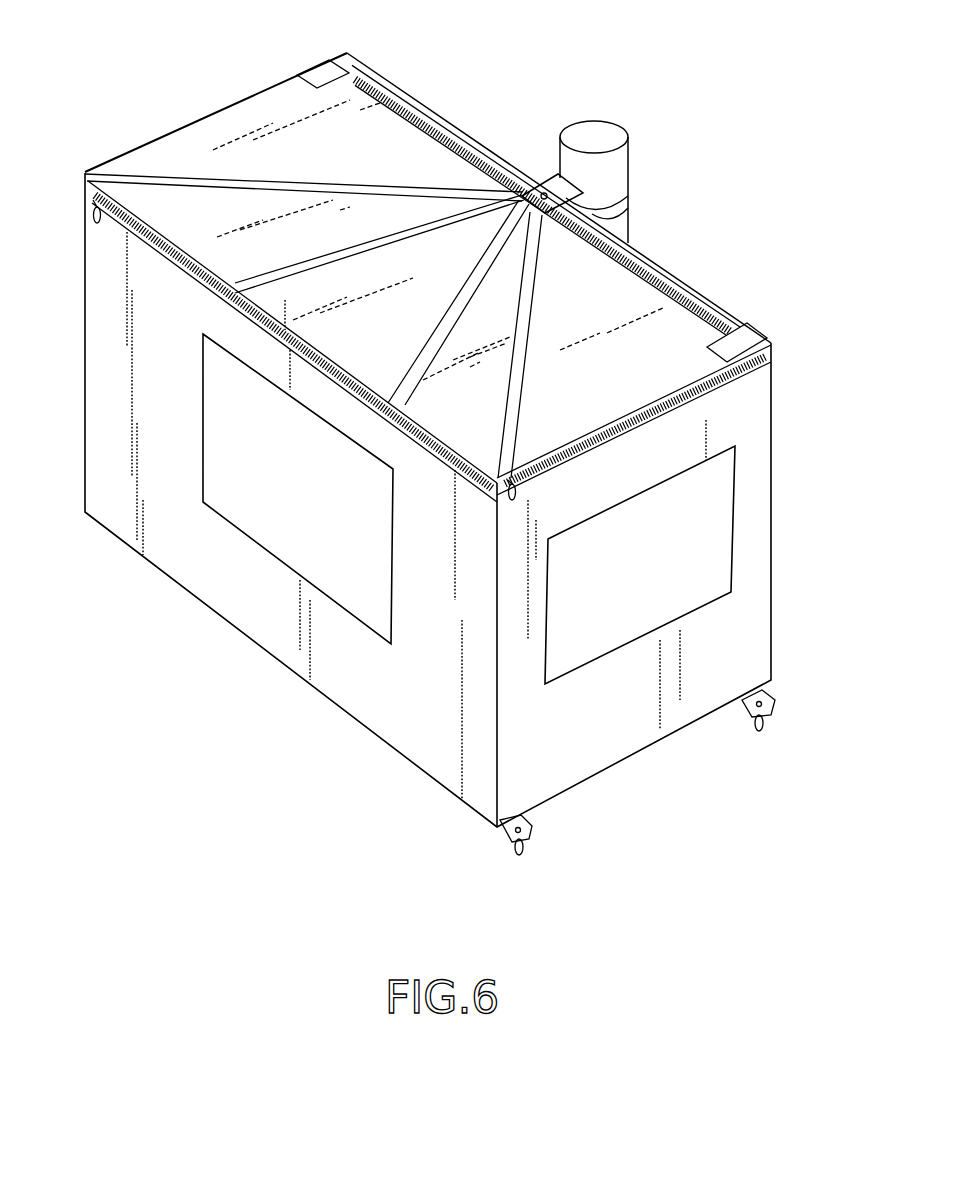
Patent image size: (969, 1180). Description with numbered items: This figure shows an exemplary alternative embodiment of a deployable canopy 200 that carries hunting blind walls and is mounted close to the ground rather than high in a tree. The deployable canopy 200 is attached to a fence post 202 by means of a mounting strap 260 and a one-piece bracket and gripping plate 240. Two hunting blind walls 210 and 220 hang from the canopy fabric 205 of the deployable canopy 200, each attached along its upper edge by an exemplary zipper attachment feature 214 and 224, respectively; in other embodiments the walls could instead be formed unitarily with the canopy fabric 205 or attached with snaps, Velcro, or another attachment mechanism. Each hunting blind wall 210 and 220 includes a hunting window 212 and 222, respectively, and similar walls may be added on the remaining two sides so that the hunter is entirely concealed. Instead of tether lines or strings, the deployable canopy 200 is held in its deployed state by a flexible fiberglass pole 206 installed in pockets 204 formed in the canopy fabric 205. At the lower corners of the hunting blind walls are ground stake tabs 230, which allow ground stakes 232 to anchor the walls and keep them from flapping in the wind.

The deployable canopy 200 is at (687, 330).
The fence post 202 is at (600, 130).
The pockets 204 is at (309, 68).
The canopy fabric 205 is at (207, 127).
The flexible fiberglass pole 206 is at (380, 93).
The hunting blind wall 210 is at (753, 425).
The hunting window 212 is at (711, 566).
The zipper attachment feature 214 is at (723, 387).
The hunting blind wall 220 is at (248, 600).
The hunting window 222 is at (220, 471).
The zipper attachment feature 224 is at (157, 243).
The ground stake tabs 230 is at (528, 825).
The ground stakes 232 is at (524, 854).
The one-piece bracket and gripping plate 240 is at (560, 150).
The mounting strap 260 is at (615, 214).